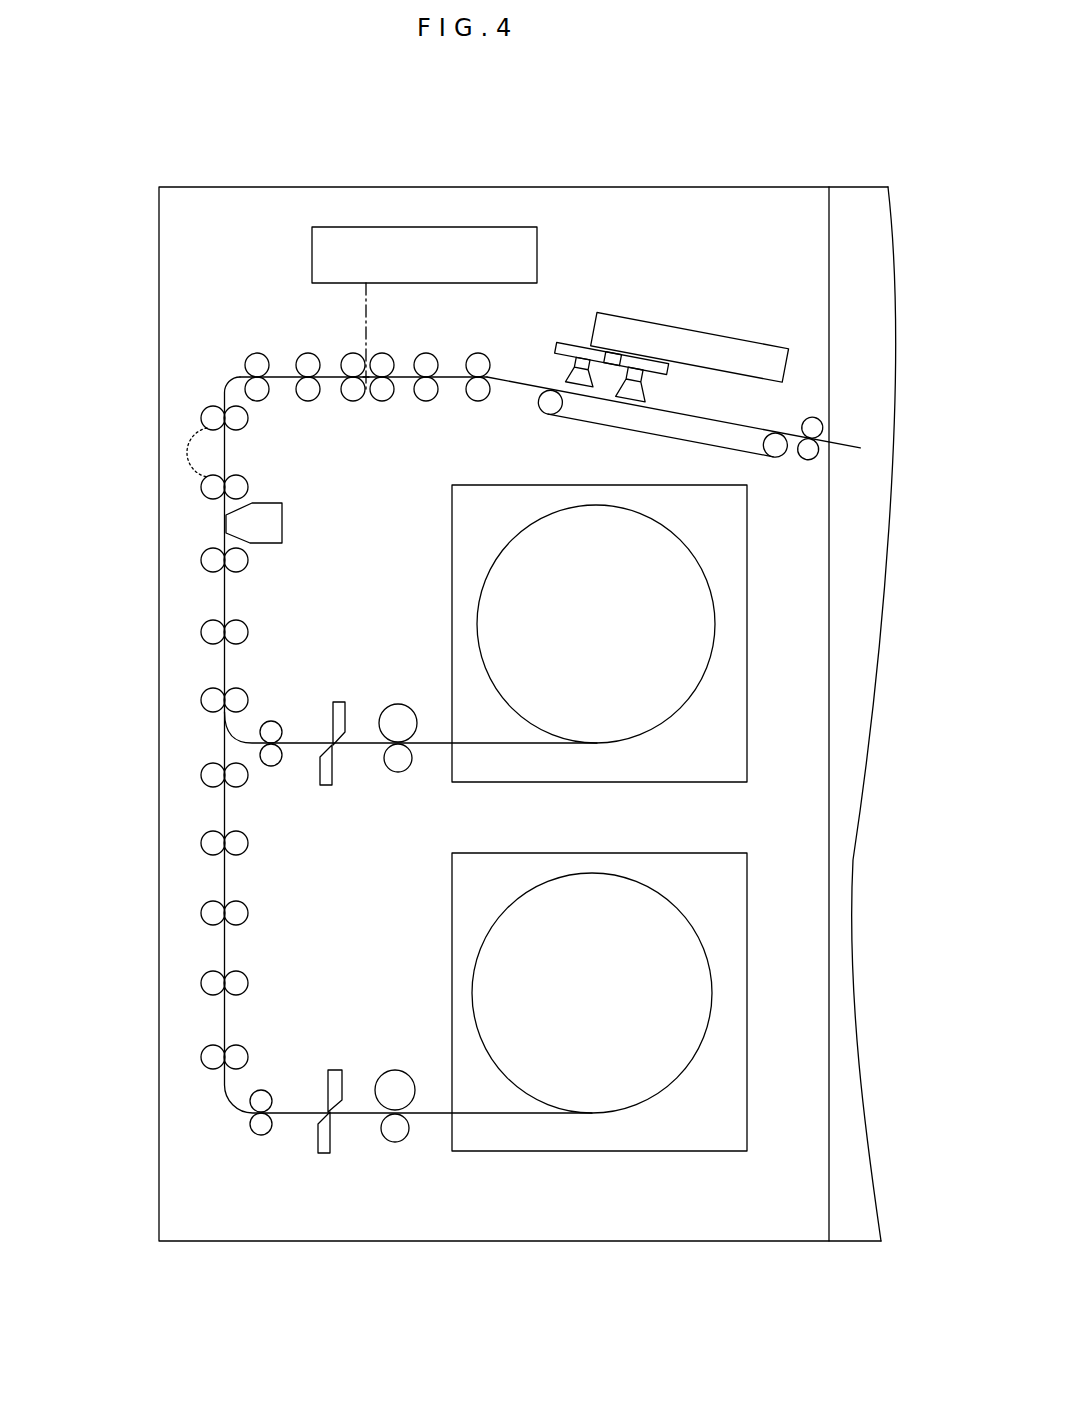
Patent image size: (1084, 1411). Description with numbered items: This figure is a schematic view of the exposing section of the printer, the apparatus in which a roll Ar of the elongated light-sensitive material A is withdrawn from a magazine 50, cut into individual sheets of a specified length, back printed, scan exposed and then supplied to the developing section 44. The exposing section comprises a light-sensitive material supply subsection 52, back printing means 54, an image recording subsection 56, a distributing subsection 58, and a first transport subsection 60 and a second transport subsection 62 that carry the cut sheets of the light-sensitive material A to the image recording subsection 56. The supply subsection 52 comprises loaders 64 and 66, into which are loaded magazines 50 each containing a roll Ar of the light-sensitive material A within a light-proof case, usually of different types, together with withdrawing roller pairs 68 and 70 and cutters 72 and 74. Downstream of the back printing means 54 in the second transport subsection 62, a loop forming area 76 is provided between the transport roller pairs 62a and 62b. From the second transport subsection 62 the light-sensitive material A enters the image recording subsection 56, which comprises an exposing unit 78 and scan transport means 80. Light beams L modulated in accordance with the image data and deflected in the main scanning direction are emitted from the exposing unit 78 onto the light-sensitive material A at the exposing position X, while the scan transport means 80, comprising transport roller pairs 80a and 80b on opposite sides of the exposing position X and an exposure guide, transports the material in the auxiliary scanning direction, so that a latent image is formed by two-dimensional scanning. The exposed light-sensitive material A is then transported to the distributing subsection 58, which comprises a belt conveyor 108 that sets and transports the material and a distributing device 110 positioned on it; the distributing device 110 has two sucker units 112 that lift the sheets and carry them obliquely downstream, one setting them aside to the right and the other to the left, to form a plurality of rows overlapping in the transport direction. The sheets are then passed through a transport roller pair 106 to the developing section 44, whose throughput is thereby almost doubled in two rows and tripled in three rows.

The developing section 44 is at (852, 1210).
The magazine 50 is at (646, 809).
The light-sensitive material supply subsection 52 is at (735, 815).
The back printing means 54 is at (282, 538).
The image recording subsection 56 is at (256, 279).
The distributing subsection 58 is at (687, 381).
The first transport subsection 60 is at (268, 916).
The second transport subsection 62 is at (214, 558).
The transport roller pair 62a is at (200, 417).
The transport roller pair 62b is at (205, 491).
The loader 64 is at (750, 617).
The loader 66 is at (551, 1154).
The withdrawing roller pair 68 is at (397, 716).
The withdrawing roller pair 70 is at (395, 1086).
The cutter 72 is at (327, 782).
The cutter 74 is at (338, 1068).
The loop forming area 76 is at (238, 449).
The exposing unit 78 is at (478, 250).
The scan transport means 80 is at (365, 429).
The transport roller pair 80a is at (345, 393).
The transport roller pair 80b is at (385, 393).
The transport roller pair 106 is at (810, 438).
The belt conveyor 108 is at (671, 425).
The distributing device 110 is at (672, 351).
The sucker unit 112 is at (608, 379).
The light-sensitive material A is at (850, 450).
The roll Ar is at (716, 652).
The light beams L is at (366, 318).
The exposing position X is at (366, 392).